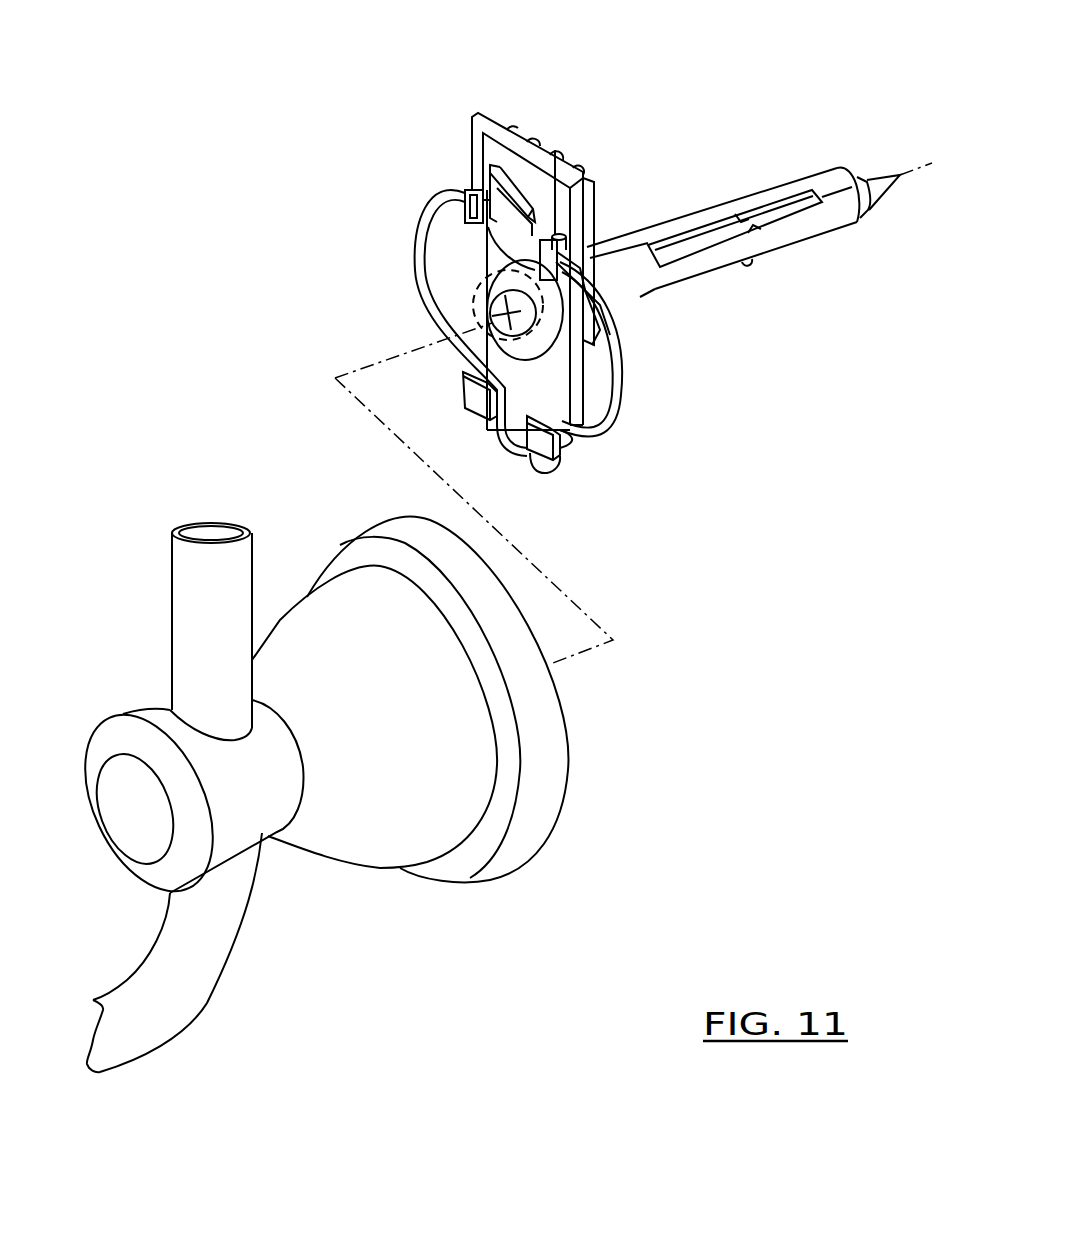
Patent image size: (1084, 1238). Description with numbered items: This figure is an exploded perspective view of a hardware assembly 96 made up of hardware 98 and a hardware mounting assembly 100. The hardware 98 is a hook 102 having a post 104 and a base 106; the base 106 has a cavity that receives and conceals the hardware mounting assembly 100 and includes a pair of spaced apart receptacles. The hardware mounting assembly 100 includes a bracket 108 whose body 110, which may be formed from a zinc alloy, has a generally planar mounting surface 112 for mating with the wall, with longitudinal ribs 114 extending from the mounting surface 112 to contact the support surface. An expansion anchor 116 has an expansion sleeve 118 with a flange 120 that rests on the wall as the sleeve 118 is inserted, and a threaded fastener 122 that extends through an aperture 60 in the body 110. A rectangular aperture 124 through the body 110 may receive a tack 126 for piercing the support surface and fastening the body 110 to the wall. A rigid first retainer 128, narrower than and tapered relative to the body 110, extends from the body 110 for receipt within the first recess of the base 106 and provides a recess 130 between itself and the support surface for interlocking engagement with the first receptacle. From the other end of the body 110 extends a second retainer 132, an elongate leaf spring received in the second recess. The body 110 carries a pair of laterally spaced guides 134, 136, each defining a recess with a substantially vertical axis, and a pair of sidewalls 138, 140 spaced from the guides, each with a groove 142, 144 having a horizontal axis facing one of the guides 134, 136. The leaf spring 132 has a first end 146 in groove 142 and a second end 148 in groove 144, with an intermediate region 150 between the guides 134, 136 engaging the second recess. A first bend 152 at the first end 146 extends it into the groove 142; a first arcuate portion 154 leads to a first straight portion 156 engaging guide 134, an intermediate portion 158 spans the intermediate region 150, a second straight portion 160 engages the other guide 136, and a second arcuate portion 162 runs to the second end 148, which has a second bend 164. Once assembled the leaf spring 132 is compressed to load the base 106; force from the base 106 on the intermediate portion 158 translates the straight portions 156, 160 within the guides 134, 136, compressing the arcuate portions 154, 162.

The hardware assembly 96 is at (318, 84).
The hardware 98 is at (195, 468).
The hardware mounting assembly 100 is at (585, 75).
The hook 102 is at (205, 1003).
The post 104 is at (268, 838).
The base 106 is at (478, 880).
The bracket 108 is at (467, 142).
The body 110 is at (490, 343).
The mounting surface 112 is at (565, 152).
The ribs 114 is at (533, 137).
The expansion anchor 116 is at (777, 253).
The expansion sleeve 118 is at (833, 233).
The flange 120 is at (600, 352).
The threaded fastener 122 is at (725, 232).
The rectangular aperture 124 is at (545, 282).
The tack 126 is at (487, 237).
The first retainer 128 is at (474, 113).
The recess 130 is at (500, 170).
The second retainer 132 is at (510, 463).
The guide 134 is at (477, 407).
The guide 136 is at (557, 443).
The sidewall 138 is at (485, 206).
The sidewall 140 is at (578, 300).
The groove 142 is at (483, 207).
The groove 144 is at (575, 268).
The first end 146 is at (467, 187).
The second end 148 is at (562, 230).
The intermediate region 150 is at (525, 472).
The first bend 152 is at (492, 200).
The first arcuate portion 154 is at (425, 288).
The first straight portion 156 is at (512, 440).
The intermediate portion 158 is at (530, 475).
The second straight portion 160 is at (563, 466).
The second arcuate portion 162 is at (605, 440).
The second bend 164 is at (585, 265).
The aperture 60 is at (474, 316).